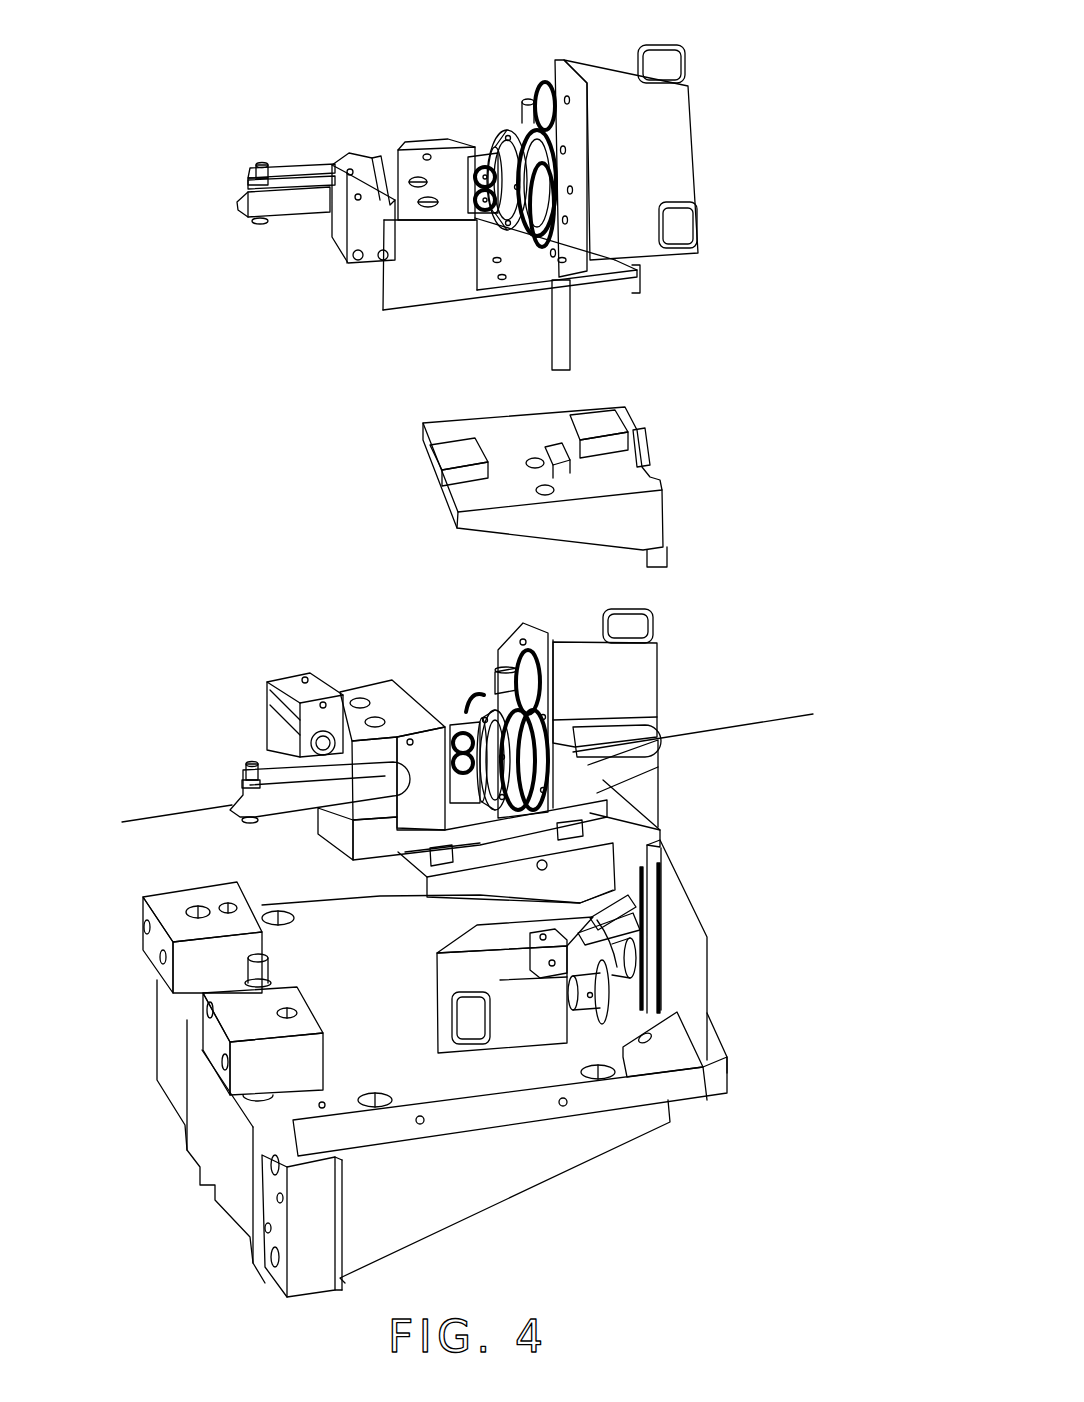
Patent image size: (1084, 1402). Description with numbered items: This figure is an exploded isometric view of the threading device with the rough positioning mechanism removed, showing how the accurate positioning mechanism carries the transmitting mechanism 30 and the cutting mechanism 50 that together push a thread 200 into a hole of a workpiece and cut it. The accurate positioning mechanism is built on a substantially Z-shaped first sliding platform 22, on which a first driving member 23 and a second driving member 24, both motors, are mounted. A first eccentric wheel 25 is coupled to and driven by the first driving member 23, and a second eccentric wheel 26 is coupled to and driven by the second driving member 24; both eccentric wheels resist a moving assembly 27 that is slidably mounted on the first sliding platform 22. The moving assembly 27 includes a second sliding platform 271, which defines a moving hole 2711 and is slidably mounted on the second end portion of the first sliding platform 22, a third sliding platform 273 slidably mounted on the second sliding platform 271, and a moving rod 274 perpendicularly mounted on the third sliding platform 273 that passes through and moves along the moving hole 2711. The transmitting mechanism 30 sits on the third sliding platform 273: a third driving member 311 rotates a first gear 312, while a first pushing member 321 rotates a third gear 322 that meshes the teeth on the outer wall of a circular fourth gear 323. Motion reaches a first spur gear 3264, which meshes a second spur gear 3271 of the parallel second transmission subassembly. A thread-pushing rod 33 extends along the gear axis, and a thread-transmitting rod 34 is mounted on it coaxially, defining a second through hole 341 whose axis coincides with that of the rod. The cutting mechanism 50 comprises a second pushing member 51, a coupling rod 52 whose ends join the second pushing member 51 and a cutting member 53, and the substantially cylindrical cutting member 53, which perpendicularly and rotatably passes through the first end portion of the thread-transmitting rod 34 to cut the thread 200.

The transmitting mechanism 30 is at (540, 47).
The third driving member 311 is at (623, 60).
The first gear 312 is at (545, 83).
The first pushing member 321 is at (673, 162).
The third gear 322 is at (548, 215).
The fourth gear 323 is at (565, 135).
The first spur gear 3264 is at (467, 153).
The thread-pushing rod 33 is at (467, 150).
The second spur gear 3271 is at (473, 210).
The cutting mechanism 50 is at (278, 78).
The second pushing member 51 is at (340, 163).
The coupling rod 52 is at (298, 172).
The cutting member 53 is at (260, 172).
The thread-transmitting rod 34 is at (295, 210).
The second through hole 341 is at (238, 205).
The moving assembly 27 is at (788, 268).
The second sliding platform 271 is at (643, 508).
The moving hole 2711 is at (557, 443).
The third sliding platform 273 is at (623, 283).
The moving rod 274 is at (563, 340).
The thread 200 is at (768, 721).
The first sliding platform 22 is at (695, 1083).
The first driving member 23 is at (520, 1037).
The second driving member 24 is at (577, 935).
The first eccentric wheel 25 is at (580, 997).
The second eccentric wheel 26 is at (643, 945).